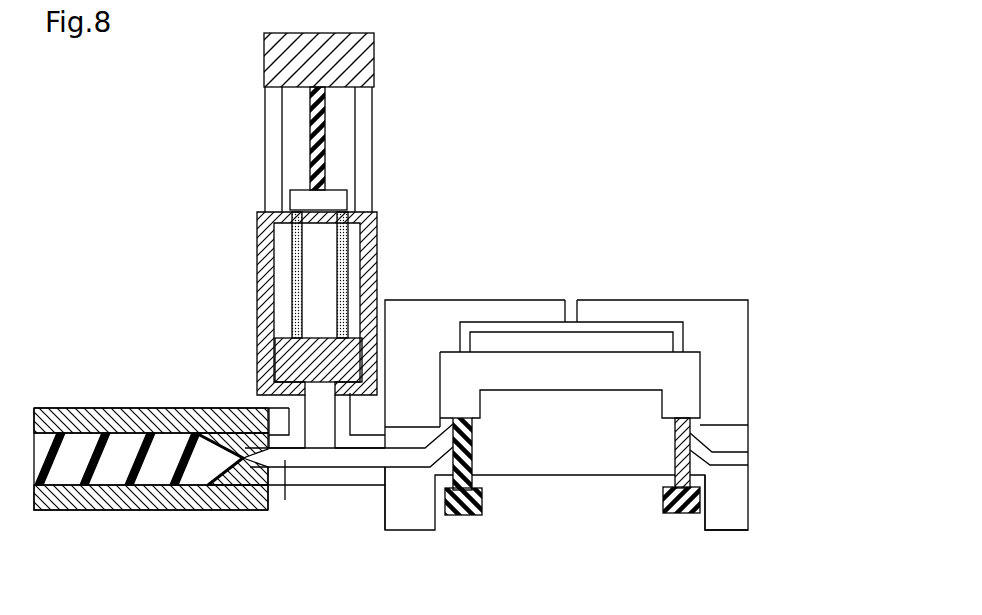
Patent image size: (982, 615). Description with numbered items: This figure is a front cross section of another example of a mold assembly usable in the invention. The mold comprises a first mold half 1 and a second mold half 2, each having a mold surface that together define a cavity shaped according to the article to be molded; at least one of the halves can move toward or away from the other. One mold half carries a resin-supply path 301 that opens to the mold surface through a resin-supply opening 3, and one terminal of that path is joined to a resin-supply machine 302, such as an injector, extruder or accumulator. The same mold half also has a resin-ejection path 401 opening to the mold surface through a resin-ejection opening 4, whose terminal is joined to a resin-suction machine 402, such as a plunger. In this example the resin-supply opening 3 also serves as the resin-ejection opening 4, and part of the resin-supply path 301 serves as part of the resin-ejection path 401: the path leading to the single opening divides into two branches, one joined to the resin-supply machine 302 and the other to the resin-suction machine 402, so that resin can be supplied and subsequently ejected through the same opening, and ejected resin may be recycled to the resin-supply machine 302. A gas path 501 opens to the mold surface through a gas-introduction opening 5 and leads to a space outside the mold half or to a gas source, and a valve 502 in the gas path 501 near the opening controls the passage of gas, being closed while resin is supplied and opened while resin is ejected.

The first mold half 1 is at (730, 350).
The second mold half 2 is at (735, 500).
The resin-supply opening 3 is at (472, 423).
The resin-ejection opening 4 is at (463, 501).
The gas-introduction opening 5 is at (698, 418).
The resin-supply path 301 is at (281, 470).
The resin-supply machine 302 is at (172, 422).
The resin-ejection path 401 is at (310, 423).
The resin-suction machine 402 is at (413, 232).
The gas path 501 is at (728, 460).
The valve 502 is at (688, 470).